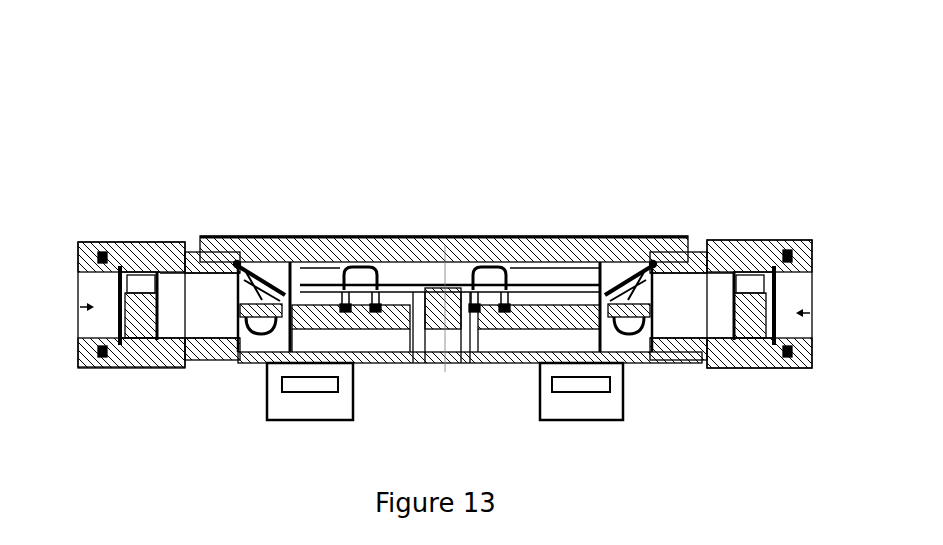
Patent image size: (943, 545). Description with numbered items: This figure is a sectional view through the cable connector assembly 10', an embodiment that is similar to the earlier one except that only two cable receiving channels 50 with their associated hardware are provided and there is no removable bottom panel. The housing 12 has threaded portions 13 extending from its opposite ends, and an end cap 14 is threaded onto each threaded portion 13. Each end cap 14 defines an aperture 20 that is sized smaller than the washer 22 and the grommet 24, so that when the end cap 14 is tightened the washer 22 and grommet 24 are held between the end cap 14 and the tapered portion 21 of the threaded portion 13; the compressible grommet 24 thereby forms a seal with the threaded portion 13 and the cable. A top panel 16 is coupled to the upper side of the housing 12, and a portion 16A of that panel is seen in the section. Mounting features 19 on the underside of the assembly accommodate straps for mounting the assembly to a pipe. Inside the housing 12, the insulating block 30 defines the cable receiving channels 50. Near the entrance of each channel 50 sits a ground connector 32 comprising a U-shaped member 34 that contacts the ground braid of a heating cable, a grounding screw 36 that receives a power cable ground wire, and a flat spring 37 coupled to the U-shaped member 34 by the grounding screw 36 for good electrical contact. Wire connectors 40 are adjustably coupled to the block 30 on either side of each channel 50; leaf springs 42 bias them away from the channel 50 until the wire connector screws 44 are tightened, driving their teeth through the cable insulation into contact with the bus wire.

The cable connector assembly 10' is at (359, 224).
The housing 12 is at (678, 268).
The threaded portion 13 is at (180, 252).
The end cap 14 is at (88, 242).
The top panel 16 is at (656, 262).
The panel portion 16A is at (668, 272).
The mounting feature 19 is at (320, 393).
The aperture 20 is at (88, 307).
The tapered portion 21 is at (140, 262).
The washer 22 is at (120, 252).
The grommet 24 is at (153, 262).
The insulating block 30 is at (612, 330).
The ground connector 32 is at (283, 290).
The U-shaped member 34 is at (240, 262).
The grounding screw 36 is at (262, 270).
The flat spring 37 is at (233, 289).
The wire connector 40 is at (347, 306).
The leaf spring 42 is at (416, 332).
The wire connector screw 44 is at (362, 270).
The cable receiving channel 50 is at (398, 290).